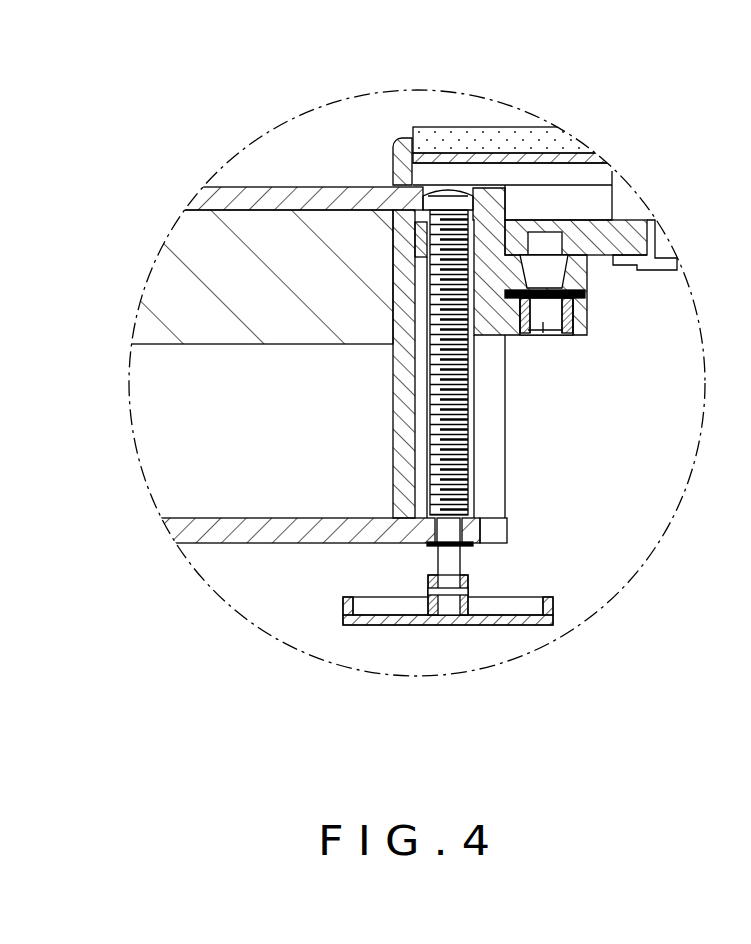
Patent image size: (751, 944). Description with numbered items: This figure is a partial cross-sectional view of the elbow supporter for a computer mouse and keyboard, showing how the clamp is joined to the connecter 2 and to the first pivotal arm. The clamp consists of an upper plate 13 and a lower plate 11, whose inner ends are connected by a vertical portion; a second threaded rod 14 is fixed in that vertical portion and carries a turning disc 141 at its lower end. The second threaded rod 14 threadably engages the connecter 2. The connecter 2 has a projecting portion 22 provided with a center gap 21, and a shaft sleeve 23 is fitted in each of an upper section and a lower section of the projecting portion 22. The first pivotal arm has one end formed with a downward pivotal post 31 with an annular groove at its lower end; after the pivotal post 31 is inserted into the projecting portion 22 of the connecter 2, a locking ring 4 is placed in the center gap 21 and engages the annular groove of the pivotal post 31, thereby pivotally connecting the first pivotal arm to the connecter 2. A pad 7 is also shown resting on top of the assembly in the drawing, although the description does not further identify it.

The pad 7 is at (482, 130).
The upper plate 13 is at (322, 188).
The lower plate 11 is at (290, 533).
The second threaded rod 14 is at (442, 427).
The turning disc 141 is at (410, 622).
The connecter 2 is at (492, 337).
The pivotal post 31 is at (543, 325).
The locking ring 4 is at (583, 320).
The center gap 21 is at (610, 323).
The projecting portion 22 is at (583, 272).
The shaft sleeve 23 is at (570, 257).